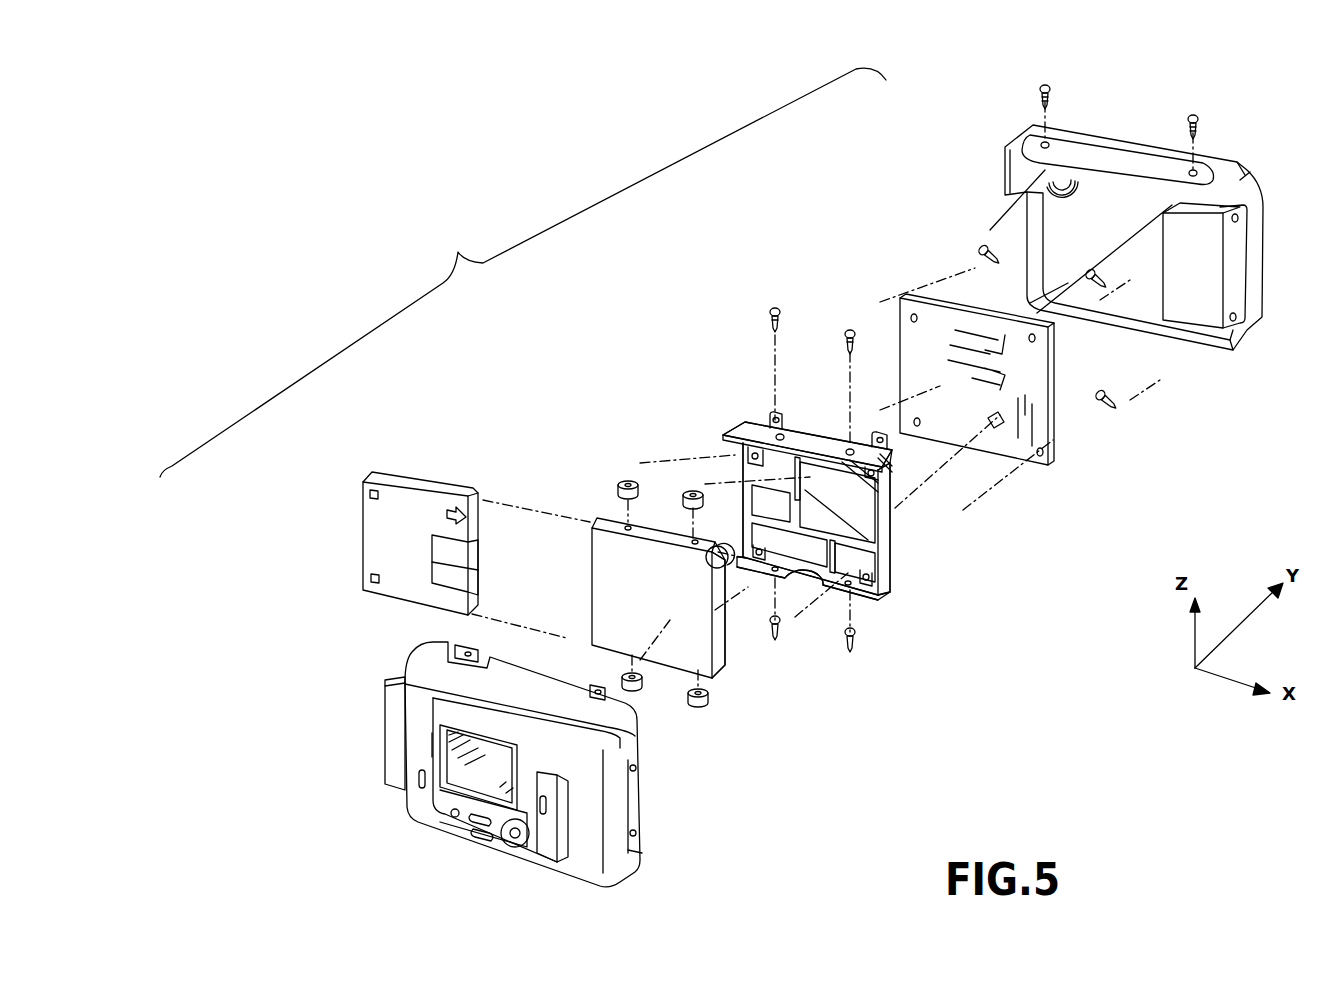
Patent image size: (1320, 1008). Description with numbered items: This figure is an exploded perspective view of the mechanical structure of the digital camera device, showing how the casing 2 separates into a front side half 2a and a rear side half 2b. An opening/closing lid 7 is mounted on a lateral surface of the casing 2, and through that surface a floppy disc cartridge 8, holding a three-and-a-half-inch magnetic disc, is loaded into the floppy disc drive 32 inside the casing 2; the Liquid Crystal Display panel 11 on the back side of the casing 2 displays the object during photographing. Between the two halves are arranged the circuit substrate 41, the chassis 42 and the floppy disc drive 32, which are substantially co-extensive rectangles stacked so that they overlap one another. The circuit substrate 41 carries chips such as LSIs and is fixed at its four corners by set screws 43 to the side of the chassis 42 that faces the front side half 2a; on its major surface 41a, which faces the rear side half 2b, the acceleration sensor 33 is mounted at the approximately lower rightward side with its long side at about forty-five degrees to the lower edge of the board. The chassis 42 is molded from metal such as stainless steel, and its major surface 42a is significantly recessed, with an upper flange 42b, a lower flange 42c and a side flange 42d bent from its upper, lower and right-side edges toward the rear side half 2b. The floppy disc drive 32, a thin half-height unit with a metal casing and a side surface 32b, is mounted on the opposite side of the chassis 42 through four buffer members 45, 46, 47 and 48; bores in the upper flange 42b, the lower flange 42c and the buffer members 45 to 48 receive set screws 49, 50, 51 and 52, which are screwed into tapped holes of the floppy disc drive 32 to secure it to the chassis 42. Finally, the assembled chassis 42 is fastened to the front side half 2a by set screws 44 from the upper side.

The casing 2 is at (461, 245).
The front side half 2a is at (1066, 220).
The rear side half 2b is at (413, 662).
The opening/closing lid 7 is at (384, 703).
The floppy disc cartridge 8 is at (355, 505).
The Liquid Crystal Display panel 11 is at (455, 762).
The floppy disc drive 32 is at (603, 560).
The lens unit side surface 32b is at (778, 652).
The acceleration sensor 33 is at (1000, 428).
The circuit substrate 41 is at (905, 335).
The major surface 41a is at (1045, 430).
The chassis 42 is at (742, 434).
The major surface 42a is at (878, 562).
The upper flange 42b is at (755, 430).
The lower flange 42c is at (870, 592).
The side flange 42d is at (885, 520).
The set screws 43 is at (982, 252).
The set screws 44 is at (1052, 96).
The buffer member 45 is at (626, 480).
The buffer member 46 is at (690, 490).
The buffer member 47 is at (643, 690).
The buffer member 48 is at (708, 703).
The set screw 49 is at (775, 308).
The set screw 50 is at (850, 330).
The set screw 51 is at (782, 636).
The set screw 52 is at (856, 646).